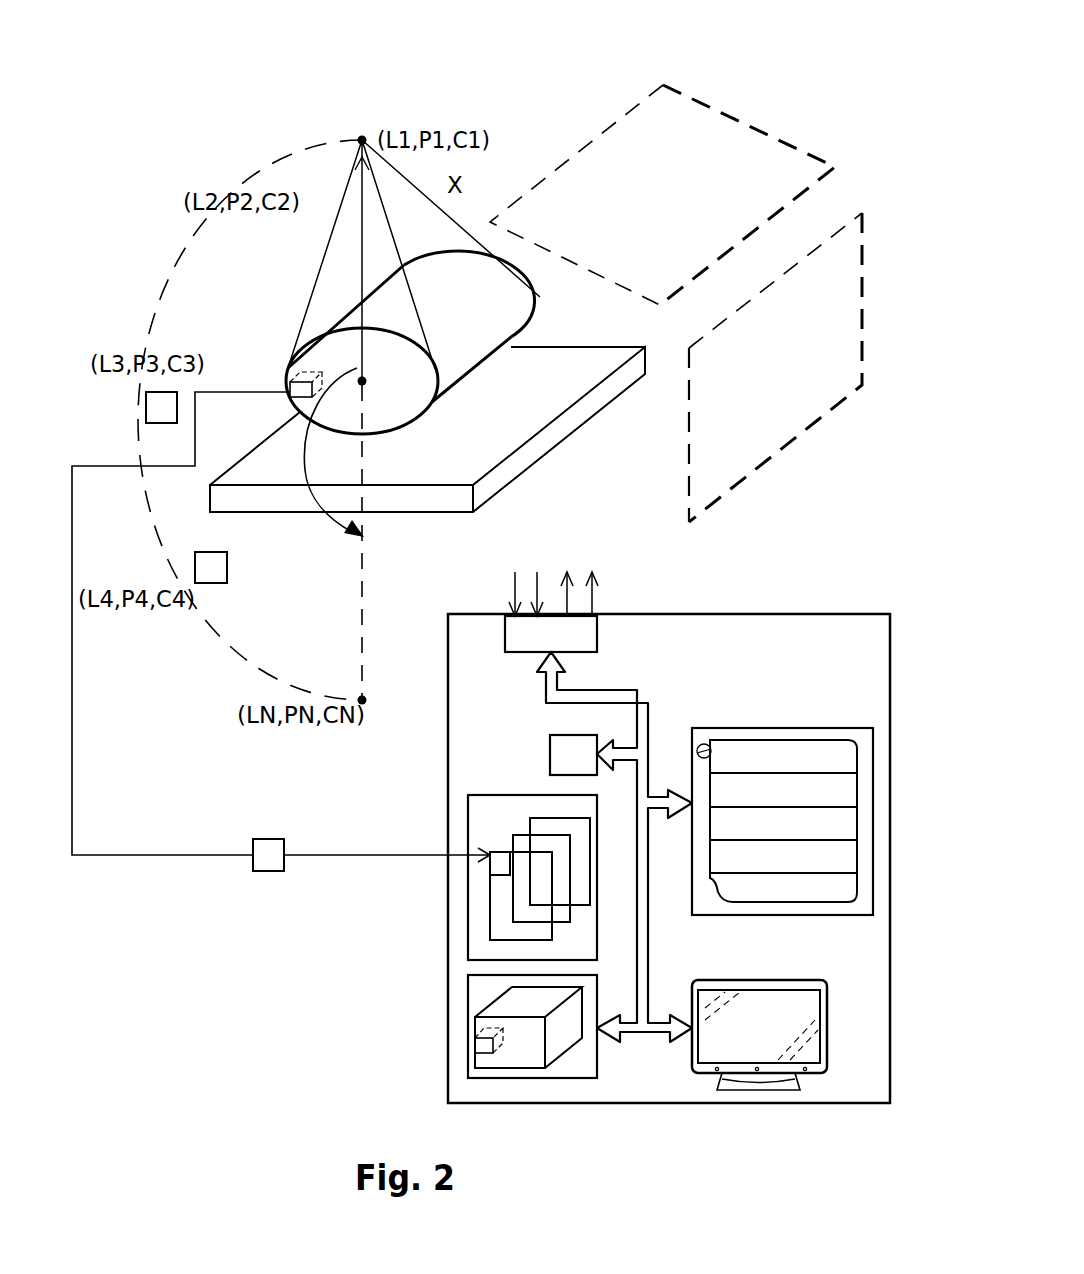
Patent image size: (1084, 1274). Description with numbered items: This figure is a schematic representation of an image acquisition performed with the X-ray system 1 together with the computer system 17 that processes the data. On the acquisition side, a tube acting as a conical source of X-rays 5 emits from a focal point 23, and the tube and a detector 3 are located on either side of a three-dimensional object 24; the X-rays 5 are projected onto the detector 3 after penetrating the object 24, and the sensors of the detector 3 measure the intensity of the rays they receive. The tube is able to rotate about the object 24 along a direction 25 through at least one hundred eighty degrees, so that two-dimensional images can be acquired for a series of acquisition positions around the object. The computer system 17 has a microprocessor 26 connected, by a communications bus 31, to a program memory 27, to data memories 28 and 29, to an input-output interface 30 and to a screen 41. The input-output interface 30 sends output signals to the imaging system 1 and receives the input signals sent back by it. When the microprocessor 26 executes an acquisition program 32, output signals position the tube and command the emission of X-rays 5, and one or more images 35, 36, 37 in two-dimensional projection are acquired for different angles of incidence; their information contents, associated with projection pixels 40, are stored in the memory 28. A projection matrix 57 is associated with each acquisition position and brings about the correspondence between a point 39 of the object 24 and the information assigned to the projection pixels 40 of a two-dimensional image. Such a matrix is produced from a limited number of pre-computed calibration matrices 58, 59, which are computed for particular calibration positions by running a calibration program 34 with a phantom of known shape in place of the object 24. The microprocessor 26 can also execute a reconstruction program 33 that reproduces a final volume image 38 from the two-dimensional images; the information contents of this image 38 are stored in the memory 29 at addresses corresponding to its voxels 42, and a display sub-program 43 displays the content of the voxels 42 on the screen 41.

The X-ray system 1 is at (581, 66).
The detector 3 is at (500, 445).
The X-rays 5 is at (340, 262).
The computer system 17 is at (732, 597).
The X-ray source focal point 23 is at (362, 138).
The 3D object 24 is at (530, 303).
The direction 25 is at (305, 460).
The microprocessor 26 is at (550, 750).
The program memory 27 is at (780, 727).
The data memory 28 is at (468, 892).
The data memory 29 is at (468, 990).
The input-output interface 30 is at (598, 630).
The communications bus 31 is at (651, 704).
The acquisition program 32 is at (850, 752).
The reconstruction program 33 is at (850, 785).
The calibration program 34 is at (850, 820).
The 2D projection image 35 is at (490, 928).
The 2D projection image 36 is at (572, 912).
The 2D projection image 37 is at (535, 812).
The final volume image 38 is at (508, 1070).
The point of the object 39 is at (307, 370).
The projection pixels 40 is at (497, 870).
The screen 41 is at (828, 1018).
The voxels 42 is at (480, 1043).
The display sub-program 43 is at (850, 853).
The projection matrix 57 is at (270, 873).
The calibration matrix 58 is at (145, 407).
The calibration matrix 59 is at (227, 567).